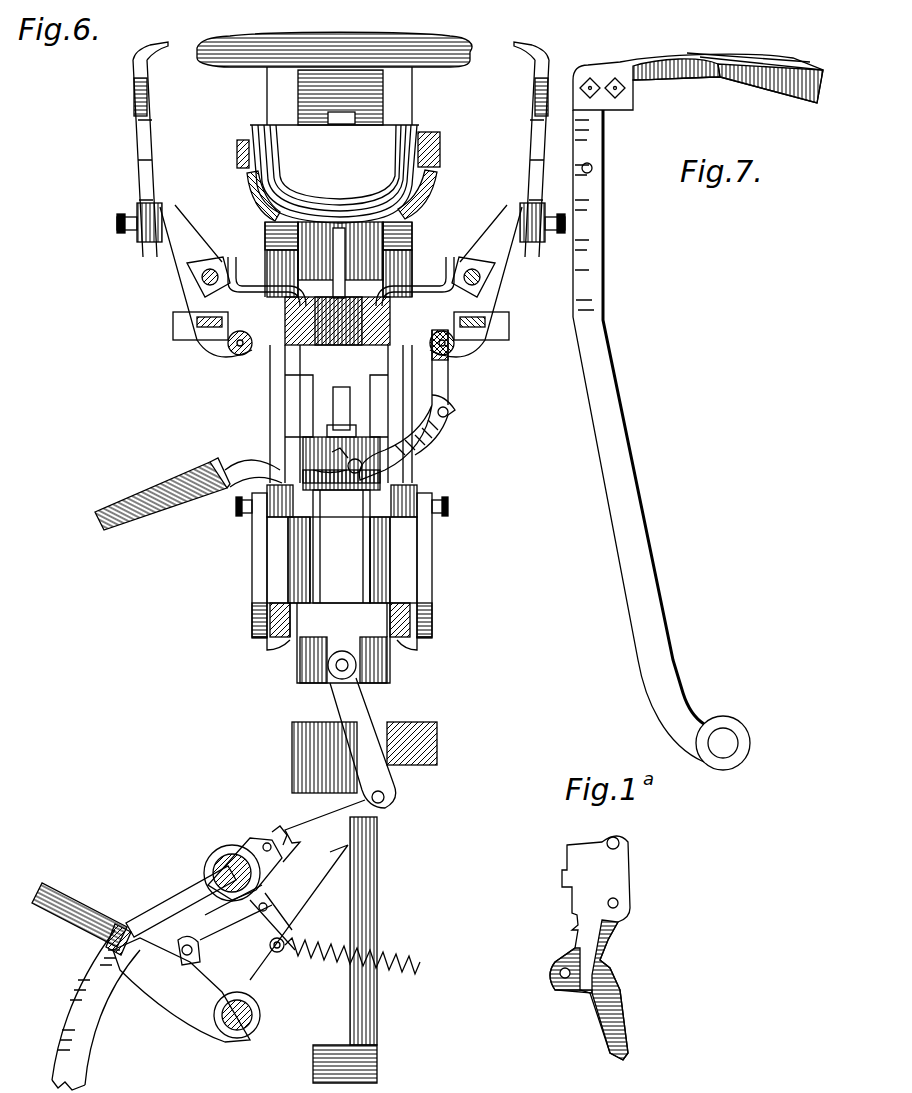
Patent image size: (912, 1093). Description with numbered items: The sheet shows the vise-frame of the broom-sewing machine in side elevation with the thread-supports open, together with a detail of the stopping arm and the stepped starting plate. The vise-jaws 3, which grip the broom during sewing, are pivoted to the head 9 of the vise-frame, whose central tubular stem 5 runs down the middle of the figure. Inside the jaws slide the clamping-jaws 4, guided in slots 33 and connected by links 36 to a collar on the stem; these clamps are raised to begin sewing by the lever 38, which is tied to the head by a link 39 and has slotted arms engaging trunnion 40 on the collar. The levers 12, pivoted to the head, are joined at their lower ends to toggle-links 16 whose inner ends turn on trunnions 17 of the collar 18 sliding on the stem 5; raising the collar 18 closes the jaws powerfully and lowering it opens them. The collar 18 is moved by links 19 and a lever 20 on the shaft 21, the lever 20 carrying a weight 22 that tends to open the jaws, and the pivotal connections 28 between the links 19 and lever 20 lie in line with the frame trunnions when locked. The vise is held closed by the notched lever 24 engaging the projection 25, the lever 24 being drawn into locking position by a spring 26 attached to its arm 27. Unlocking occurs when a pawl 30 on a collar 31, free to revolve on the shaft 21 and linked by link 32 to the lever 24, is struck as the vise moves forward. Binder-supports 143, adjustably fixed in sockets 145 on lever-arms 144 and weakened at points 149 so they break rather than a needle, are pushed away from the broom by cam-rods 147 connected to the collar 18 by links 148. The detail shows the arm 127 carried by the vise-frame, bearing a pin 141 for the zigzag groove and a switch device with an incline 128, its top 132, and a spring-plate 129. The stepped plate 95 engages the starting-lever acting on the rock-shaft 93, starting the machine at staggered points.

In FIG. 6, the vise-jaws 3 is at (338, 34).
In FIG. 6, the slots 33 is at (355, 118).
In FIG. 6, the clamping-jaws 4 is at (338, 174).
In FIG. 6, the links 36 is at (345, 263).
In FIG. 6, the head 9 is at (298, 338).
In FIG. 6, the cam-rods 147 is at (240, 305).
In FIG. 6, the lever-arms 144 is at (178, 265).
In FIG. 6, the sockets 145 is at (138, 212).
In FIG. 6, the binder-supports 143 is at (175, 137).
In FIG. 6, the weakened points 149 is at (134, 93).
In FIG. 6, the link 39 is at (448, 378).
In FIG. 6, the lever 38 is at (165, 500).
In FIG. 6, the trunnion 40 is at (352, 463).
In FIG. 6, the links 148 is at (252, 545).
In FIG. 6, the levers 12 is at (270, 577).
In FIG. 6, the central tubular stem 5 is at (341, 536).
In FIG. 6, the trunnions 17 is at (270, 617).
In FIG. 6, the collar 18 is at (342, 648).
In FIG. 6, the toggle-links 16 is at (285, 645).
In FIG. 6, the links 19 is at (364, 743).
In FIG. 6, the pivotal connections 28 is at (385, 797).
In FIG. 6, the lever 20 is at (313, 941).
In FIG. 6, the pawl 30 is at (275, 828).
In FIG. 6, the collar 31 is at (228, 850).
In FIG. 6, the shaft 21 is at (212, 868).
In FIG. 6, the plate or projection 25 is at (160, 917).
In FIG. 6, the link 32 is at (220, 940).
In FIG. 6, the weight 22 is at (290, 928).
In FIG. 6, the spring 26 is at (354, 955).
In FIG. 6, the notched lever 24 is at (100, 940).
In FIG. 6, the arm 27 is at (265, 985).
In FIG. 6, the rock-shaft 93 is at (225, 1025).
In FIG. 7, the arm 127 is at (640, 545).
In FIG. 7, the pin 141 is at (592, 172).
In FIG. 7, the top of incline 132 is at (670, 52).
In FIG. 7, the spring-plate 129 is at (765, 55).
In FIG. 7, the incline 128 is at (778, 90).
In FIG. 1A, the notched plate 95 is at (575, 935).